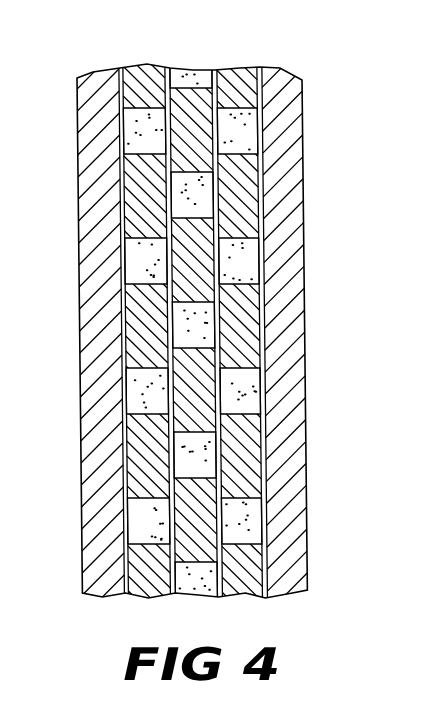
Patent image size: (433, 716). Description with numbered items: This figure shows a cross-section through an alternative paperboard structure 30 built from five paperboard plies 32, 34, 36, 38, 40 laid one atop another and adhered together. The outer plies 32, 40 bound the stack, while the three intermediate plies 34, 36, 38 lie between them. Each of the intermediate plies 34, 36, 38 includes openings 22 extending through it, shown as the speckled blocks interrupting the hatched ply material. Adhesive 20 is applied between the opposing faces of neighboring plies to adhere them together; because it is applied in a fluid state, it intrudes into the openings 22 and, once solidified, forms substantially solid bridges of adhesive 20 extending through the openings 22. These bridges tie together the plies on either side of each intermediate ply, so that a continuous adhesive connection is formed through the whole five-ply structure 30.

The adhesive 20 is at (127, 246).
The openings 22 is at (132, 121).
The paperboard structure 30 is at (337, 354).
The paperboard ply 32 is at (295, 226).
The intermediate paperboard ply 34 is at (237, 78).
The intermediate paperboard ply 36 is at (192, 97).
The intermediate paperboard ply 38 is at (142, 72).
The paperboard ply 40 is at (92, 380).